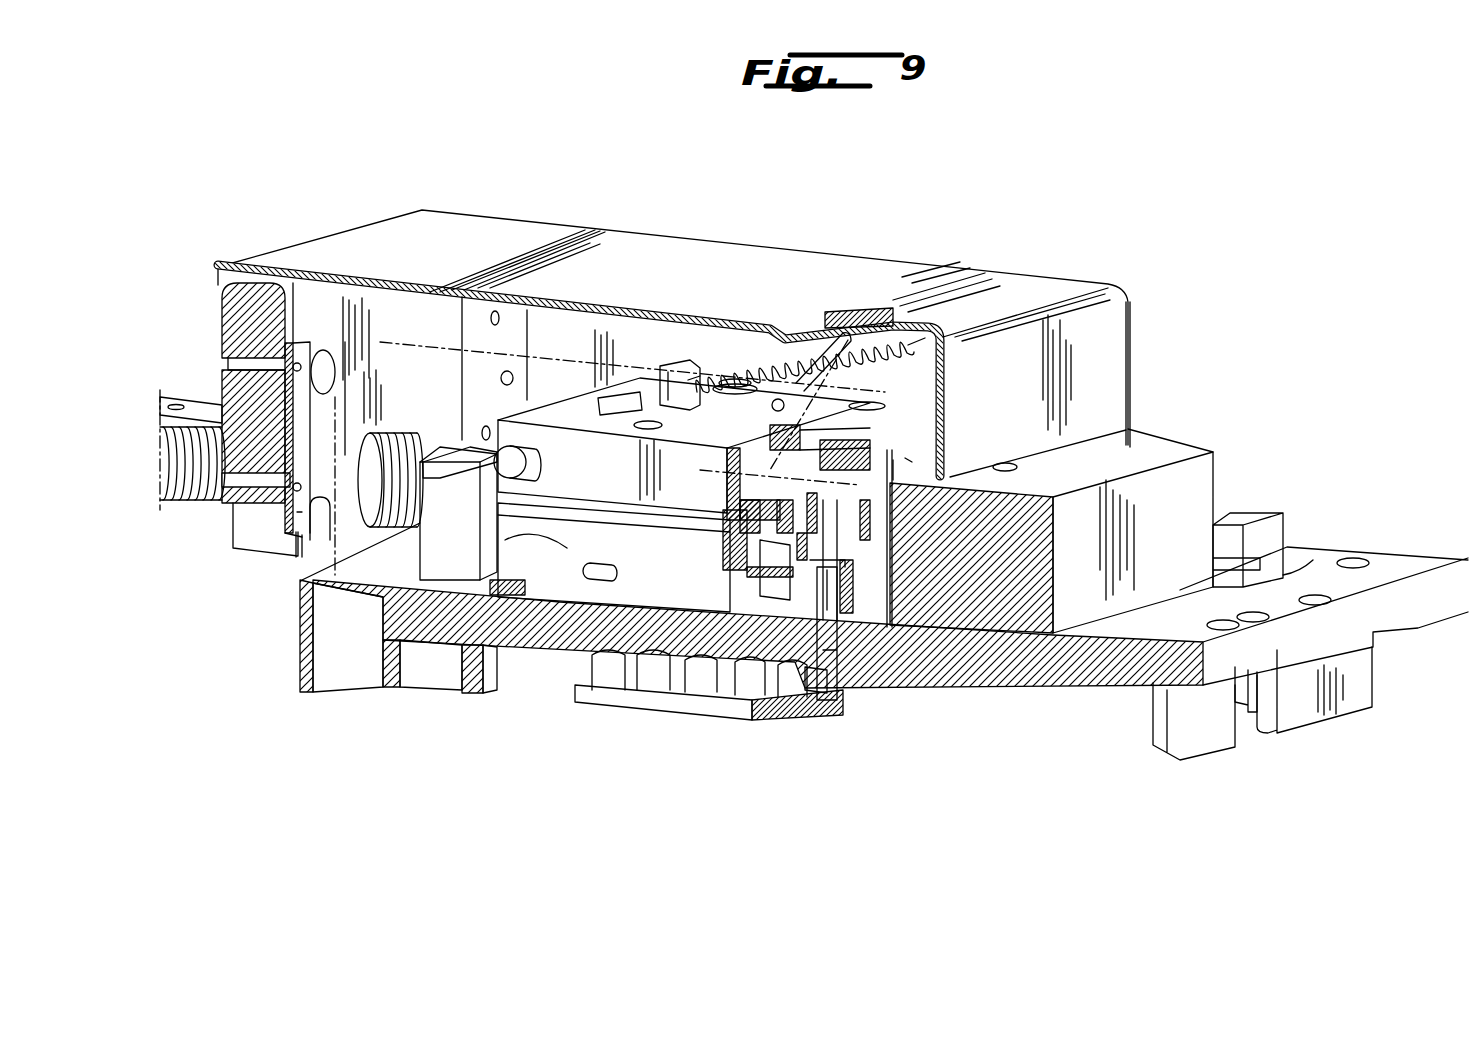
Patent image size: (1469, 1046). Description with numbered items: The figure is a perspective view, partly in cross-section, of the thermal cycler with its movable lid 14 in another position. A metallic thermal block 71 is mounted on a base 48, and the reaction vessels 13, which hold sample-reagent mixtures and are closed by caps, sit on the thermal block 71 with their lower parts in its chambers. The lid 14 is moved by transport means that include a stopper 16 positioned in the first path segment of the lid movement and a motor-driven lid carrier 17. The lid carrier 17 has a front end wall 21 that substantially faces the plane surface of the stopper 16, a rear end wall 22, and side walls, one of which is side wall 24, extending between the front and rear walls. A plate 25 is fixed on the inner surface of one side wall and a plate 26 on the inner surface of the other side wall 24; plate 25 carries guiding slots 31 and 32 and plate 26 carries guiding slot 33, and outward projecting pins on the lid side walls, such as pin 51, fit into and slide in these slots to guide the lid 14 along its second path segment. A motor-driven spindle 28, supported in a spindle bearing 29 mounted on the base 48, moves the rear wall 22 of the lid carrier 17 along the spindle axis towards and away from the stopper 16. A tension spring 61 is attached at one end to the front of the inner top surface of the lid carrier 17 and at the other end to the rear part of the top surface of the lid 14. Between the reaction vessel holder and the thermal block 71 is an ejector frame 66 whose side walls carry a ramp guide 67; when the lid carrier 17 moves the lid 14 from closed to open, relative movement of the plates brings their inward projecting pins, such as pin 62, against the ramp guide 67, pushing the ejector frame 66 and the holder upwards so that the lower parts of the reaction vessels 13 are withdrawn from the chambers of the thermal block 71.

The reaction vessels 13 is at (835, 660).
The movable lid 14 is at (910, 420).
The stopper 16 is at (1192, 485).
The lid carrier 17 is at (690, 255).
The front end wall 21 is at (1098, 345).
The rear end wall 22 is at (240, 343).
The side wall 24 is at (1131, 393).
The plate 25 is at (383, 345).
The plate 26 is at (625, 343).
The spindle 28 is at (194, 497).
The spindle bearing 29 is at (445, 600).
The guiding slot 31 is at (560, 388).
The guiding slot 32 is at (760, 482).
The guiding slot 33 is at (838, 330).
The base 48 is at (1395, 567).
The pin 51 is at (545, 470).
The tension spring 61 is at (752, 356).
The pin 62 is at (620, 573).
The ejector frame 66 is at (505, 555).
The ramp guide 67 is at (545, 560).
The thermal block 71 is at (660, 705).